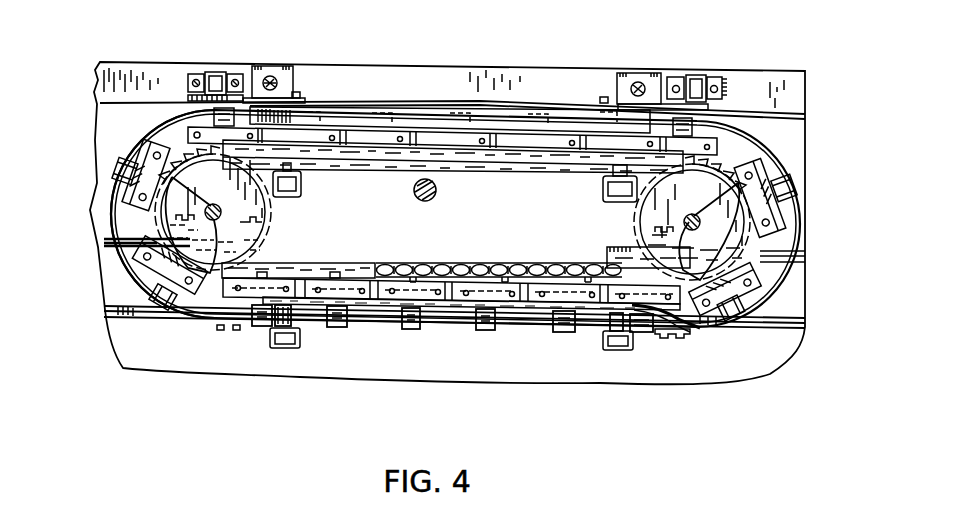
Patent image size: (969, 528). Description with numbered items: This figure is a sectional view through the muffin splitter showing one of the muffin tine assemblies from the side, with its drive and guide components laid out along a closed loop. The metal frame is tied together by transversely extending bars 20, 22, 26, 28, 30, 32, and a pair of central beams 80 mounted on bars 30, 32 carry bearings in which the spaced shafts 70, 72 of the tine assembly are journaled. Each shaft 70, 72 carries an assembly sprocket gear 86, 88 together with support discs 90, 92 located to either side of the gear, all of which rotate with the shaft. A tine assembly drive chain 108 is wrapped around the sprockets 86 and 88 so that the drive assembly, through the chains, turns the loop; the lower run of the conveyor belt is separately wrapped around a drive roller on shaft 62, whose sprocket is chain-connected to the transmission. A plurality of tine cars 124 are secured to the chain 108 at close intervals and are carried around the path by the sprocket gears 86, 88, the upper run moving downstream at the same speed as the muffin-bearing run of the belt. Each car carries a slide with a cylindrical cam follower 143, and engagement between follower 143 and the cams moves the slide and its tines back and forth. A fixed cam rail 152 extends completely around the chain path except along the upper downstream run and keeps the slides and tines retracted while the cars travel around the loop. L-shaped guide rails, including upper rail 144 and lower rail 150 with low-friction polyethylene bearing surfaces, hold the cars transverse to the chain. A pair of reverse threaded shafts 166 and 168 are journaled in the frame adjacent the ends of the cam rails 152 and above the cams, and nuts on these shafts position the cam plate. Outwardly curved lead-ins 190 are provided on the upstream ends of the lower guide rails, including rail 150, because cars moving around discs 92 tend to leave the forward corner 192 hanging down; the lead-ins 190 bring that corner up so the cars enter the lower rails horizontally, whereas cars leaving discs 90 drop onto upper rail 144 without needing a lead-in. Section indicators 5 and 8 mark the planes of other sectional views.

The transversely extending bar 20 is at (690, 81).
The transversely extending bar 22 is at (218, 72).
The transversely extending bar 26 is at (605, 186).
The transversely extending bar 28 is at (303, 190).
The transversely extending bar 30 is at (268, 341).
The transversely extending bar 32 is at (603, 343).
The shaft 62 is at (437, 190).
The shaft 70 is at (113, 248).
The shaft 72 is at (780, 256).
The central beam 80 is at (123, 317).
The assembly sprocket gear 86 is at (262, 210).
The assembly sprocket gear 88 is at (640, 206).
The support disc 90 is at (205, 214).
The support disc 92 is at (705, 226).
The tine assembly drive chain 108 is at (490, 263).
The tine car 124 is at (117, 203).
The cam follower 143 is at (116, 163).
The guide rail 144 is at (497, 162).
The guide rail 150 is at (378, 310).
The cam rail 152 is at (150, 124).
The reverse threaded shaft 166 is at (283, 72).
The reverse threaded shaft 168 is at (625, 86).
The lead-in 190 is at (662, 335).
The forward corner 192 is at (700, 330).
The section line 5 is at (708, 21).
The section line 8 is at (335, 108).